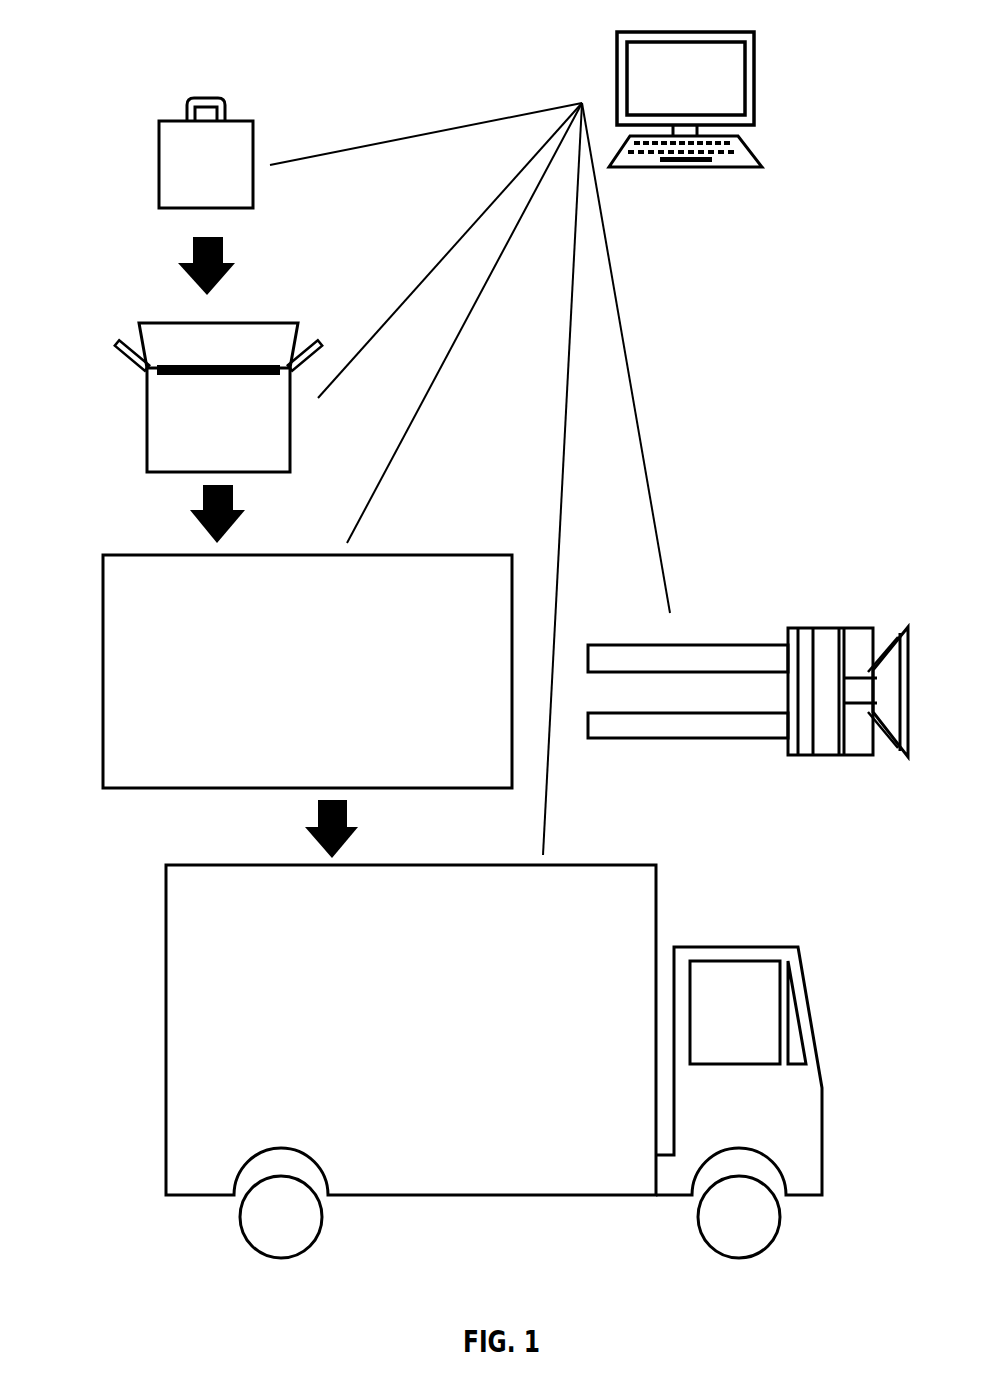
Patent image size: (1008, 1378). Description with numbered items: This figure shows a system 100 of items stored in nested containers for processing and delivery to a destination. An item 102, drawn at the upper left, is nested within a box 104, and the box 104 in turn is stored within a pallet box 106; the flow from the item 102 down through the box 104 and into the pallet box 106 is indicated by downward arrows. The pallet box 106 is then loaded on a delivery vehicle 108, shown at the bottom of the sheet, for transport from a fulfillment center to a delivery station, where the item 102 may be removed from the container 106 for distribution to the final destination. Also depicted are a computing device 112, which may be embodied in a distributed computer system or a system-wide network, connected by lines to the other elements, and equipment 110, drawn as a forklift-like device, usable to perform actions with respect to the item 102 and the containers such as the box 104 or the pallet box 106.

The system 100 is at (122, 60).
The item 102 is at (159, 175).
The box 104 is at (147, 438).
The pallet box 106 is at (103, 680).
The delivery vehicle 108 is at (166, 1020).
The equipment 110 is at (788, 643).
The computing device 112 is at (754, 87).